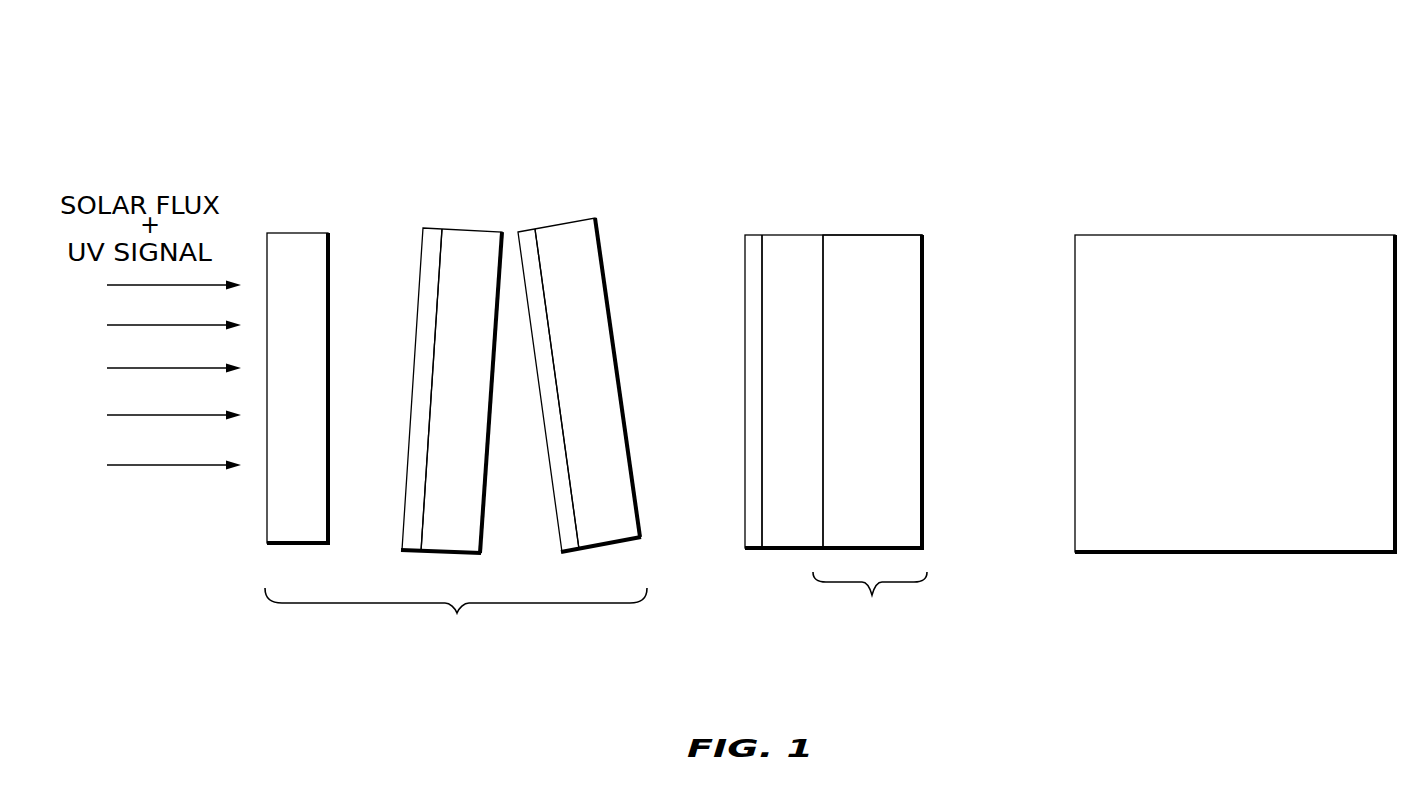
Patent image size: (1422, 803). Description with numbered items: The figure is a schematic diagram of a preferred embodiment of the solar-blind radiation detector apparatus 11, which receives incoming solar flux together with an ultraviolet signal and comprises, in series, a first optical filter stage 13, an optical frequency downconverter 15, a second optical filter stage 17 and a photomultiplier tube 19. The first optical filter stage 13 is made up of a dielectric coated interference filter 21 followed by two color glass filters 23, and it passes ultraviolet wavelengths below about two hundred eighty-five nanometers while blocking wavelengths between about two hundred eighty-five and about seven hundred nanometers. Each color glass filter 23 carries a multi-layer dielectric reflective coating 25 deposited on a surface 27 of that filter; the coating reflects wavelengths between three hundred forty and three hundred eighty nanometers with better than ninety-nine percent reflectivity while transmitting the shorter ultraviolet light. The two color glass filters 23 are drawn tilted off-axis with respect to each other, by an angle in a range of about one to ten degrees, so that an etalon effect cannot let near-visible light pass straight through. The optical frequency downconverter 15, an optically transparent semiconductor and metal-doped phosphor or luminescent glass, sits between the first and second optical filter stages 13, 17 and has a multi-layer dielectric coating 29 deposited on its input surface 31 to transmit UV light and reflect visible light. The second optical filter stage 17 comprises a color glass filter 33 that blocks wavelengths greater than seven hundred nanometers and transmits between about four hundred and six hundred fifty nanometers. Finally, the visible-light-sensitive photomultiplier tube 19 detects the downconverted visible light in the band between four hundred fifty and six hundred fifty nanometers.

The solar-blind radiation detector apparatus 11 is at (676, 93).
The first optical filter stage 13 is at (456, 633).
The optical frequency downconverter 15 is at (788, 235).
The second optical filter stage 17 is at (914, 617).
The photomultiplier tube 19 is at (1252, 463).
The dielectric coated interference filter 21 is at (330, 293).
The color glass filter 23 is at (487, 442).
The multi-layer dielectric reflective coating 25 is at (530, 228).
The surface of color glass filter 27 is at (423, 535).
The multi-layer dielectric coating 29 is at (792, 338).
The input surface of downconverter 31 is at (762, 533).
The color glass filter 33 is at (922, 370).